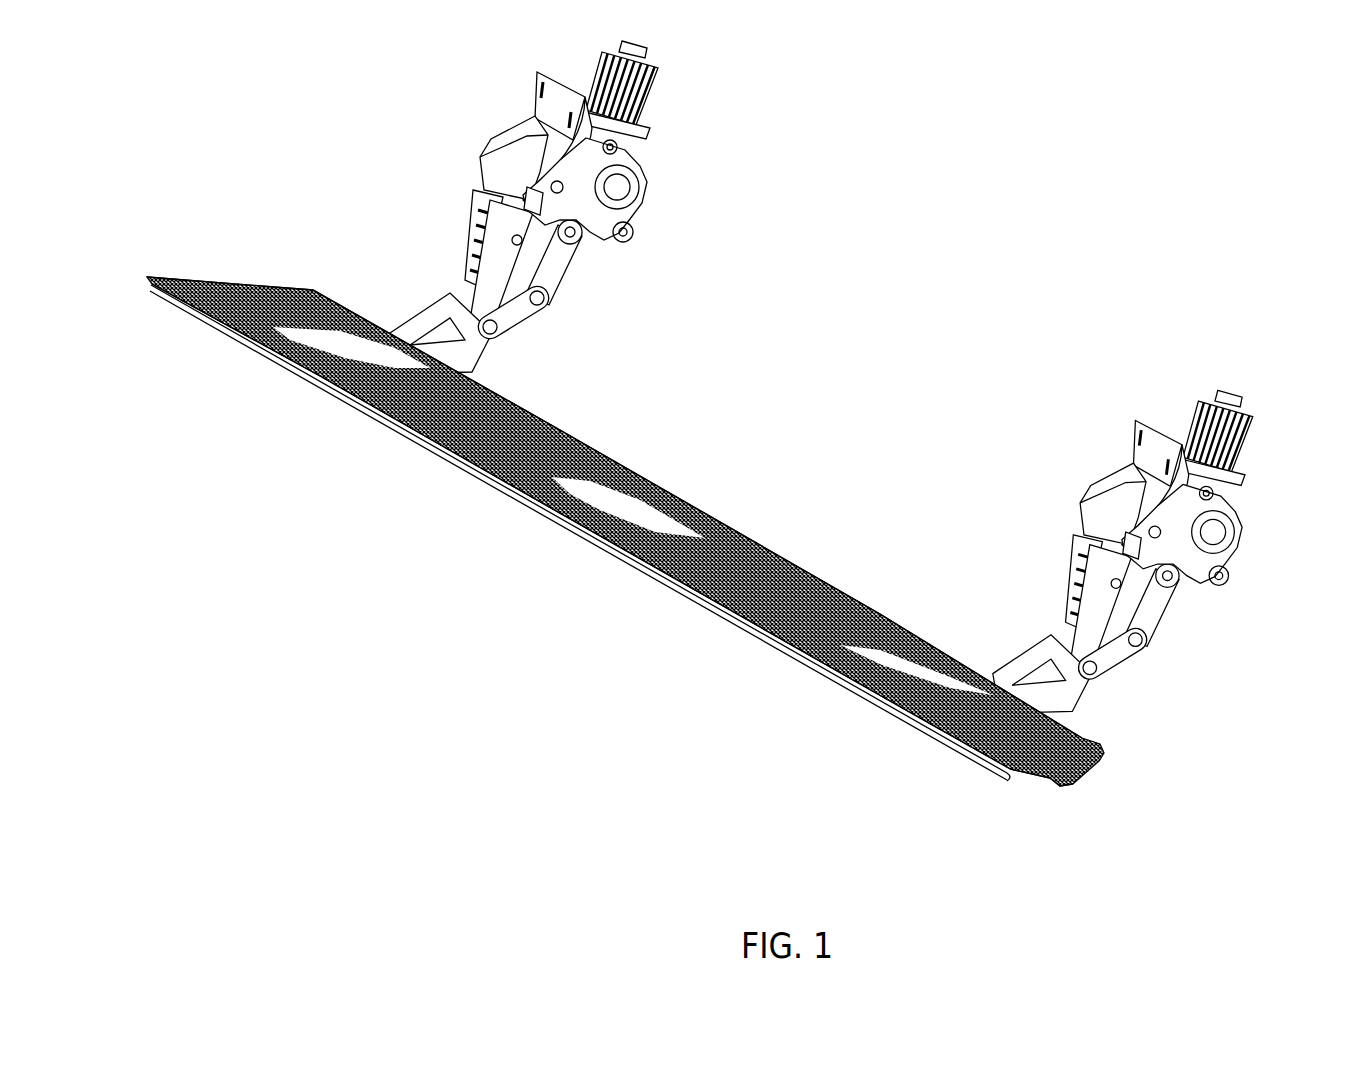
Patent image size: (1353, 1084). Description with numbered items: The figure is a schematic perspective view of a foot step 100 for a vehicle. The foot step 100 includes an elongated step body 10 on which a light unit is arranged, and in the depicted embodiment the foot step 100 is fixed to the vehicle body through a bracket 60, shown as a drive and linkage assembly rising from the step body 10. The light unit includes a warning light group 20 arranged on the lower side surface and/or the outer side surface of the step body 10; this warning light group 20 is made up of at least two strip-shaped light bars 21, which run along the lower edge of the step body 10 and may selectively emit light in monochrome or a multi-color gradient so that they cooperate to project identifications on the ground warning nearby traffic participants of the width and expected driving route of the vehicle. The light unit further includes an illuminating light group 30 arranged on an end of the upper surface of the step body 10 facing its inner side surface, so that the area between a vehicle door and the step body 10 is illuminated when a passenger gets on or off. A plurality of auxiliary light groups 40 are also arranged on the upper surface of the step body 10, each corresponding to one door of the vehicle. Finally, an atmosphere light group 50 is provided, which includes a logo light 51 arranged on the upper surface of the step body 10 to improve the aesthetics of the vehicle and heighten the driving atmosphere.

The foot step 100 is at (704, 455).
The step body 10 is at (795, 565).
The warning light group 20 is at (884, 838).
The strip-shaped light bar 21 is at (936, 755).
The illuminating light group 30 is at (668, 488).
The auxiliary light group 40 is at (337, 346).
The atmosphere light group 50 is at (581, 529).
The logo light 51 is at (571, 530).
The bracket 60 is at (1145, 652).